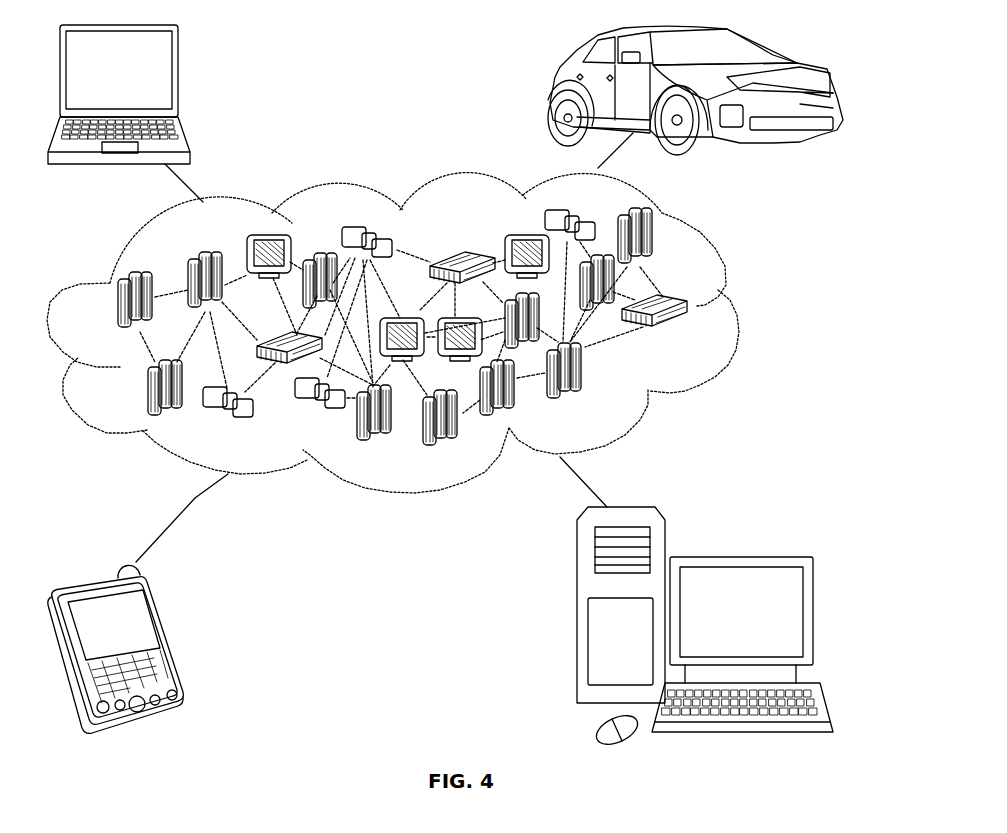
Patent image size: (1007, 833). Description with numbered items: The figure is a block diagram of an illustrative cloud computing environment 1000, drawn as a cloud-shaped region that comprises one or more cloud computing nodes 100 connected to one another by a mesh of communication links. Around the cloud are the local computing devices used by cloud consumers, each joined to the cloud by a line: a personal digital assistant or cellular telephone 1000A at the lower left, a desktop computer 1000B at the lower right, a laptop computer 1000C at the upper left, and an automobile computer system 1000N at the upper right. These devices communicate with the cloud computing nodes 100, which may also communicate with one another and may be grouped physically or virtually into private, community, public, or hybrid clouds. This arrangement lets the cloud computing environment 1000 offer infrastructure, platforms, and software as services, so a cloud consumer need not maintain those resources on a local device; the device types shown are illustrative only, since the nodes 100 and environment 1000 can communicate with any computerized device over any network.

The laptop computer 1000C is at (178, 78).
The automobile computer system 1000N is at (552, 92).
The cloud computing environment 1000 is at (740, 309).
The cloud computing nodes 100 is at (690, 336).
The personal digital assistant (PDA) or cellular telephone 1000A is at (168, 635).
The desktop computer 1000B is at (750, 535).